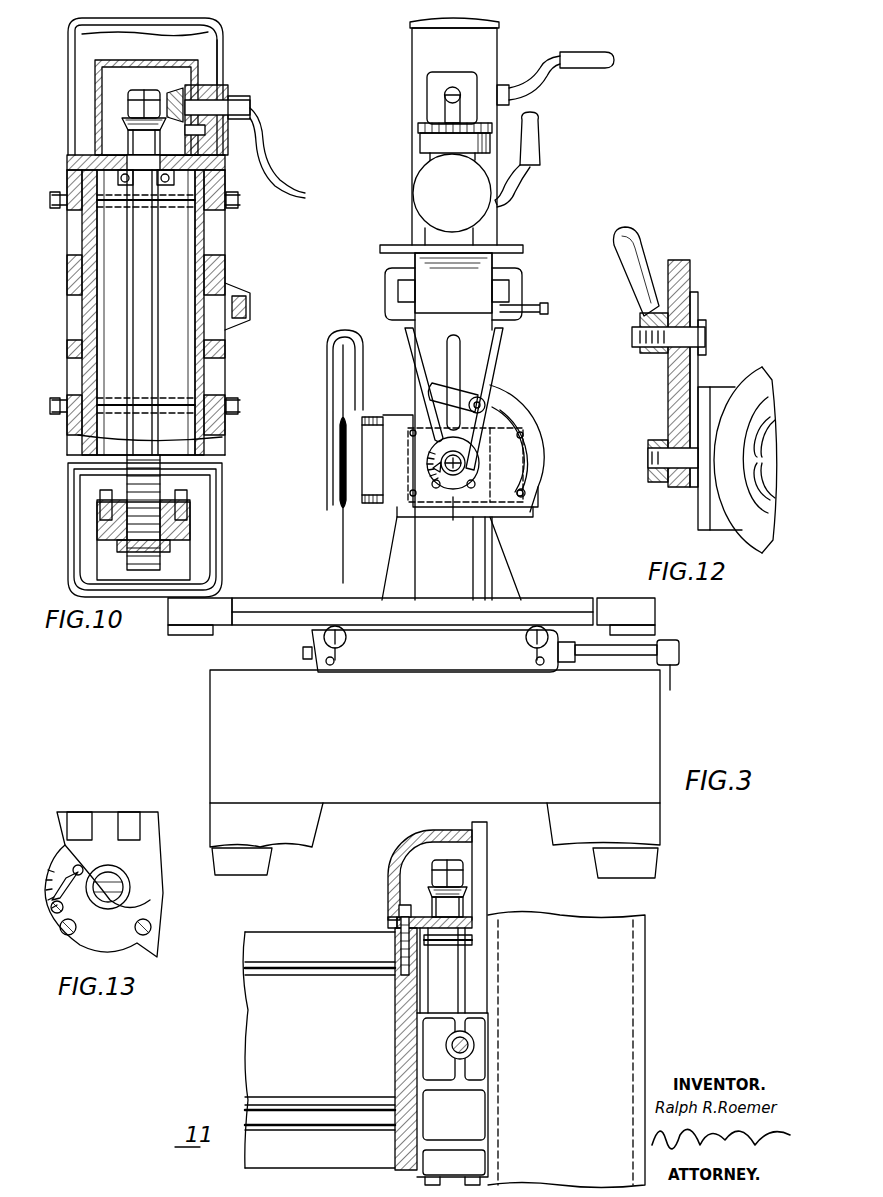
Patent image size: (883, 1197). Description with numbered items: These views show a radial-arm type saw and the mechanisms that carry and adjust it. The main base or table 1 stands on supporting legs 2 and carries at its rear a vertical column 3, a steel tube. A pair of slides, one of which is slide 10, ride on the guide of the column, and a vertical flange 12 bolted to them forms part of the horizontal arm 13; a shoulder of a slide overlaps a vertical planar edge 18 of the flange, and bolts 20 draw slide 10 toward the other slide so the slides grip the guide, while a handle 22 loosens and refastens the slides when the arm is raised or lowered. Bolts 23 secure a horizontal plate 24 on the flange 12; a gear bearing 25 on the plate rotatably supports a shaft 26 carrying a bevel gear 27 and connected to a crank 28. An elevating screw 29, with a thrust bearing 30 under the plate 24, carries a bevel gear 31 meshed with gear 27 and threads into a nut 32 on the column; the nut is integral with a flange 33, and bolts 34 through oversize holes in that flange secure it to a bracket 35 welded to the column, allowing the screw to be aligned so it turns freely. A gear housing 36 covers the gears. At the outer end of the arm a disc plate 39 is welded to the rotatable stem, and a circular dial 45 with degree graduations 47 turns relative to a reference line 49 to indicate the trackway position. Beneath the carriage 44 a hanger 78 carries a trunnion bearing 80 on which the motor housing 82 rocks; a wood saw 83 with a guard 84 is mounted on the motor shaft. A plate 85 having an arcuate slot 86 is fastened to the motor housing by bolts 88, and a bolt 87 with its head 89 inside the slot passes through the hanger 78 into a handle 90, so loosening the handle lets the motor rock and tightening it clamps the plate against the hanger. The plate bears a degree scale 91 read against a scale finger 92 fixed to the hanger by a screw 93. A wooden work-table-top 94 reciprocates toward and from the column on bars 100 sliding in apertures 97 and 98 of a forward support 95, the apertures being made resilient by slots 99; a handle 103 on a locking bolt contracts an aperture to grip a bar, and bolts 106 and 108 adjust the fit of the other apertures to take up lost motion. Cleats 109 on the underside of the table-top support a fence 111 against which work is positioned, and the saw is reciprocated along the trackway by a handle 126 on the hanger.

In FIG. 3, the main base or table 1 is at (435, 736).
In FIG. 3, the supporting legs 2 is at (313, 832).
In FIG. 3, the vertical column 3 is at (497, 58).
In FIG. 11, the vertical column 3 is at (646, 972).
In FIG. 11, the slide 10 is at (488, 1047).
In FIG. 3, the vertical flange 12 is at (476, 363).
In FIG. 11, the vertical flange 12 is at (395, 1062).
In FIG. 11, the horizontal arm 13 is at (319, 1050).
In FIG. 11, the vertical planar edge 18 is at (480, 935).
In FIG. 10, the bolts 20 is at (112, 205).
In FIG. 3, the handle 22 is at (540, 148).
In FIG. 11, the bolts 23 is at (399, 952).
In FIG. 10, the horizontal plate 24 is at (67, 162).
In FIG. 11, the horizontal plate 24 is at (418, 915).
In FIG. 10, the gear bearing 25 is at (220, 100).
In FIG. 10, the shaft 26 is at (220, 78).
In FIG. 10, the bevel gear 27 is at (175, 90).
In FIG. 10, the crank 28 is at (262, 156).
In FIG. 3, the crank 28 is at (548, 78).
In FIG. 10, the elevating screw 29 is at (158, 286).
In FIG. 11, the elevating screw 29 is at (422, 1180).
In FIG. 10, the thrust bearing 30 is at (172, 180).
In FIG. 11, the thrust bearing 30 is at (465, 948).
In FIG. 10, the bevel gear 31 is at (124, 125).
In FIG. 11, the bevel gear 31 is at (428, 885).
In FIG. 10, the nut 32 is at (143, 541).
In FIG. 10, the flange 33 is at (180, 500).
In FIG. 10, the bolts 34 is at (98, 500).
In FIG. 10, the bracket 35 is at (190, 528).
In FIG. 10, the gear housing 36 is at (125, 64).
In FIG. 11, the gear housing 36 is at (388, 858).
In FIG. 3, the plate 39 is at (523, 249).
In FIG. 3, the carriage 44 is at (510, 322).
In FIG. 3, the circular dial 45 is at (444, 120).
In FIG. 3, the graduations 47 is at (418, 130).
In FIG. 3, the reference line 49 is at (455, 137).
In FIG. 3, the hanger 78 is at (494, 360).
In FIG. 12, the hanger 78 is at (668, 405).
In FIG. 13, the hanger 78 is at (118, 812).
In FIG. 3, the trunnion bearing 80 is at (453, 477).
In FIG. 12, the trunnion bearing 80 is at (675, 487).
In FIG. 3, the motor housing 82 is at (510, 517).
In FIG. 12, the motor housing 82 is at (704, 530).
In FIG. 3, the wood saw 83 is at (344, 566).
In FIG. 3, the guard 84 is at (363, 384).
In FIG. 3, the plate 85 is at (496, 400).
In FIG. 12, the plate 85 is at (698, 380).
In FIG. 13, the plate 85 is at (160, 878).
In FIG. 3, the arcuate slot 86 is at (512, 420).
In FIG. 12, the arcuate slot 86 is at (700, 310).
In FIG. 12, the bolt 87 is at (705, 336).
In FIG. 3, the bolts 88 is at (526, 493).
In FIG. 13, the bolts 88 is at (151, 927).
In FIG. 12, the head 89 is at (706, 350).
In FIG. 3, the handle 90 is at (433, 384).
In FIG. 12, the handle 90 is at (645, 252).
In FIG. 3, the scale 91 is at (425, 452).
In FIG. 13, the scale 91 is at (52, 860).
In FIG. 3, the scale finger 92 is at (428, 467).
In FIG. 13, the scale finger 92 is at (50, 900).
In FIG. 13, the screw 93 is at (83, 870).
In FIG. 3, the work-table-top 94 is at (272, 598).
In FIG. 3, the forward support 95 is at (435, 651).
In FIG. 3, the aperture 97 is at (340, 650).
In FIG. 3, the aperture 98 is at (530, 650).
In FIG. 3, the slots 99 is at (435, 663).
In FIG. 3, the bars 100 is at (436, 627).
In FIG. 3, the handle 103 is at (675, 672).
In FIG. 3, the bolt 106 is at (303, 653).
In FIG. 3, the bolt 108 is at (607, 645).
In FIG. 3, the cleats 109 is at (195, 637).
In FIG. 3, the fence 111 is at (543, 600).
In FIG. 3, the handle 126 is at (453, 335).